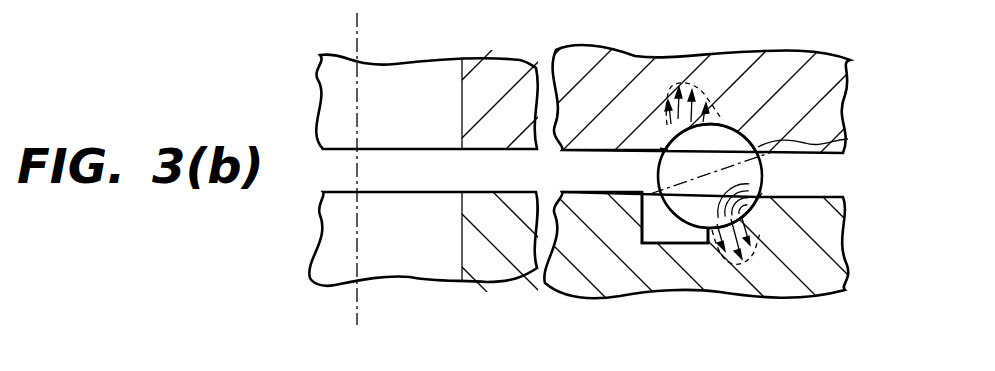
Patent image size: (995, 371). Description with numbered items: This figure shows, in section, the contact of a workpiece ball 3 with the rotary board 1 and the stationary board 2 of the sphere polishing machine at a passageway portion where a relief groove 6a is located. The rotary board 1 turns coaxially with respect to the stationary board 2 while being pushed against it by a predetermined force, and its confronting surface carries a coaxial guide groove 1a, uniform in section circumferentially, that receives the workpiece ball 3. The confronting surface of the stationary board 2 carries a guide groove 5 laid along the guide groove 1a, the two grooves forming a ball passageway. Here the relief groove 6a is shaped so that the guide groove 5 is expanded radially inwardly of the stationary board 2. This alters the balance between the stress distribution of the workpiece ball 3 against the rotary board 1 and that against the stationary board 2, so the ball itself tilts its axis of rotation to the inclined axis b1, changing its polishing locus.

The rotary board 1 is at (832, 83).
The guide groove 1a is at (660, 151).
The stationary board 2 is at (832, 231).
The workpiece ball 3 is at (757, 151).
The guide groove 5 is at (759, 197).
The relief groove 6a is at (672, 243).
The axis of rotation b1— b1 is at (711, 174).